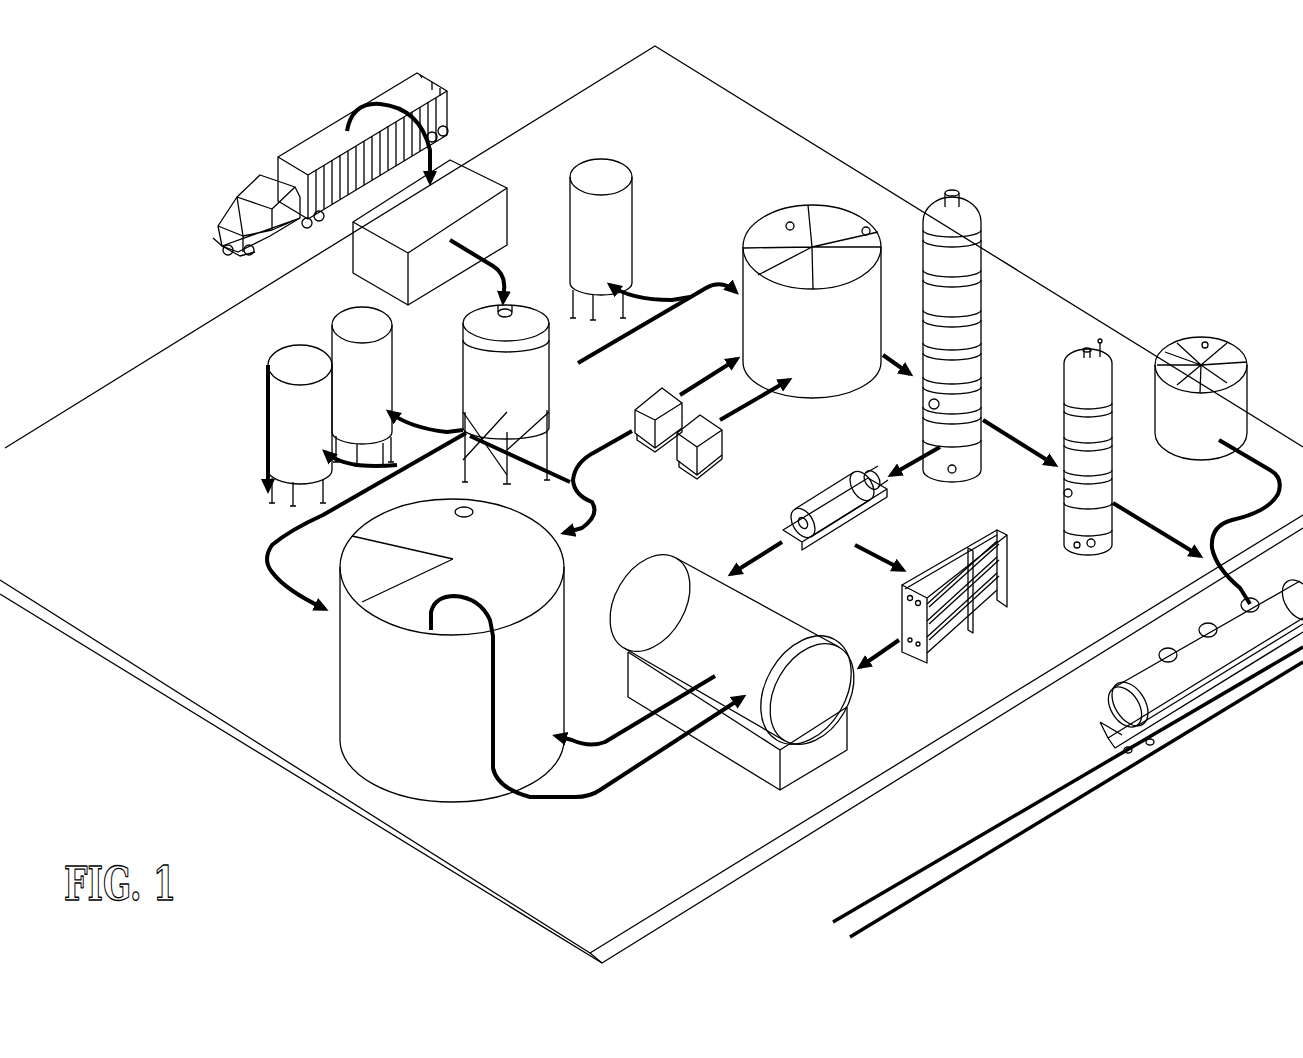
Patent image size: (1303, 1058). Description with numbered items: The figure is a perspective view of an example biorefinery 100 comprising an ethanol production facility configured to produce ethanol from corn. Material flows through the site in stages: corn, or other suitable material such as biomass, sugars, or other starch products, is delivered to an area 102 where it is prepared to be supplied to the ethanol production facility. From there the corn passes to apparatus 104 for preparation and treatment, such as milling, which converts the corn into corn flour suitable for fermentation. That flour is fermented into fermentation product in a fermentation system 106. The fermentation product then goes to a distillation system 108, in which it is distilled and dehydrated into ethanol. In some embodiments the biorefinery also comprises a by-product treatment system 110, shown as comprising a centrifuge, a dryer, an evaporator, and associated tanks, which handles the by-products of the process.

The biorefinery 100 is at (1060, 148).
The area 102 is at (439, 232).
The apparatus 104 is at (506, 394).
The fermentation system 106 is at (812, 301).
The distillation system 108 is at (1086, 408).
The by-product treatment system 110 is at (452, 650).